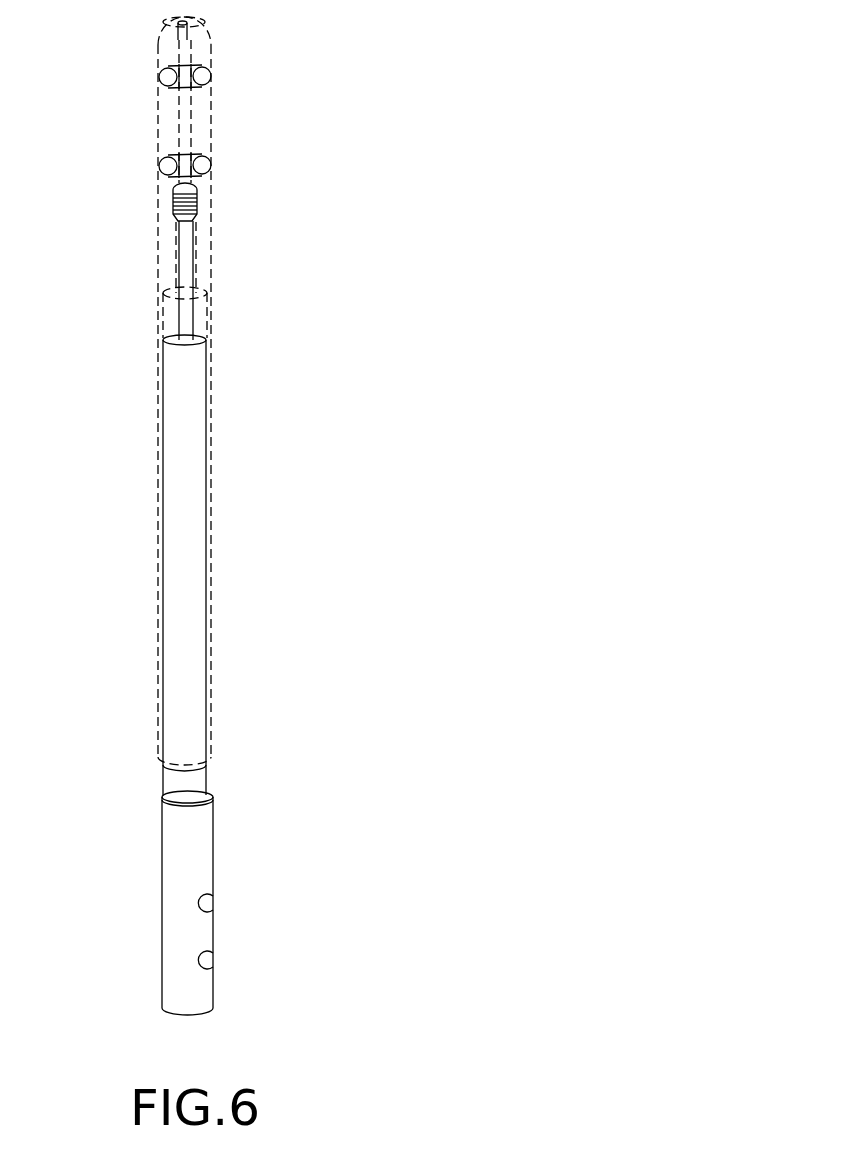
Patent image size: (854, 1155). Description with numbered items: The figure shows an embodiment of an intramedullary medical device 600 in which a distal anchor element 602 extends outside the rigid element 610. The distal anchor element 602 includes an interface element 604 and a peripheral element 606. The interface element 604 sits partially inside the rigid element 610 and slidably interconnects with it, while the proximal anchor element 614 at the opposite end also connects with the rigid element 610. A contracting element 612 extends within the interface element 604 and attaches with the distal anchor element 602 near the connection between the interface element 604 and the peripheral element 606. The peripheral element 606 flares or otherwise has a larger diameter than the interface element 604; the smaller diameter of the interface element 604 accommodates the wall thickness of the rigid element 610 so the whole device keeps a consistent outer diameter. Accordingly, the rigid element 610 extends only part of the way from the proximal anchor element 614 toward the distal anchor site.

The intramedullary medical device 600 is at (377, 52).
The distal anchor element 602 is at (210, 773).
The interface element 604 is at (177, 541).
The peripheral element 606 is at (170, 868).
The rigid element 610 is at (203, 270).
The contracting element 612 is at (185, 257).
The proximal anchor element 614 is at (165, 118).